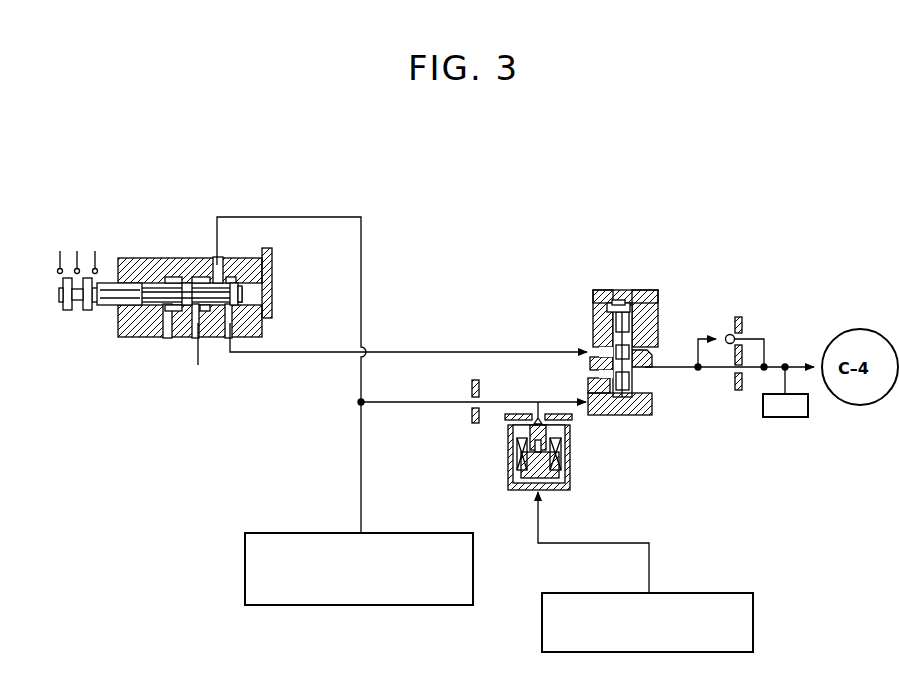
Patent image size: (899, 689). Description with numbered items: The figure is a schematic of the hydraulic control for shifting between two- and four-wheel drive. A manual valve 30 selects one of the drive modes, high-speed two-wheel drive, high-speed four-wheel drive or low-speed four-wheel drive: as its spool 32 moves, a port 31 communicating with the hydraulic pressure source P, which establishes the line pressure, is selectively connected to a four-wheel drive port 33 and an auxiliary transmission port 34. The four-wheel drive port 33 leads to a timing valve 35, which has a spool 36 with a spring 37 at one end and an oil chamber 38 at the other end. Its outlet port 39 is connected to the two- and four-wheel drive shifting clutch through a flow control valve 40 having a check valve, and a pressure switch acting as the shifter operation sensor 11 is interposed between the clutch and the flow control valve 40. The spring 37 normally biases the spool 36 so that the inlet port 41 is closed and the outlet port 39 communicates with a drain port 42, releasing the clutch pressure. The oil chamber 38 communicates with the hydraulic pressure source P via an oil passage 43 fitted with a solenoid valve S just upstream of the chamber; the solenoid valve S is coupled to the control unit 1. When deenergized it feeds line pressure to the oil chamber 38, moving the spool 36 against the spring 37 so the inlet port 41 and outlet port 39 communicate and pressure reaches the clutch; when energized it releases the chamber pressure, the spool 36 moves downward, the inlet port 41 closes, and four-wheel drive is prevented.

The control unit 1 is at (693, 599).
The 2-4 shifter operation sensor 11 is at (785, 419).
The manual valve 30 is at (162, 252).
The port 31 is at (213, 266).
The spool 32 is at (240, 296).
The four-wheel drive port 33 is at (233, 343).
The auxiliary transmission port 34 is at (197, 337).
The timing valve 35 is at (637, 287).
The spool 36 is at (640, 338).
The spring 37 is at (632, 307).
The oil chamber 38 is at (638, 404).
The outlet port 39 is at (647, 378).
The flow control valve 40 is at (750, 331).
The inlet port 41 is at (600, 350).
The drain port 42 is at (598, 378).
The oil passage 43 is at (487, 410).
The solenoid valve S is at (570, 470).
The hydraulic pressure source P is at (307, 532).